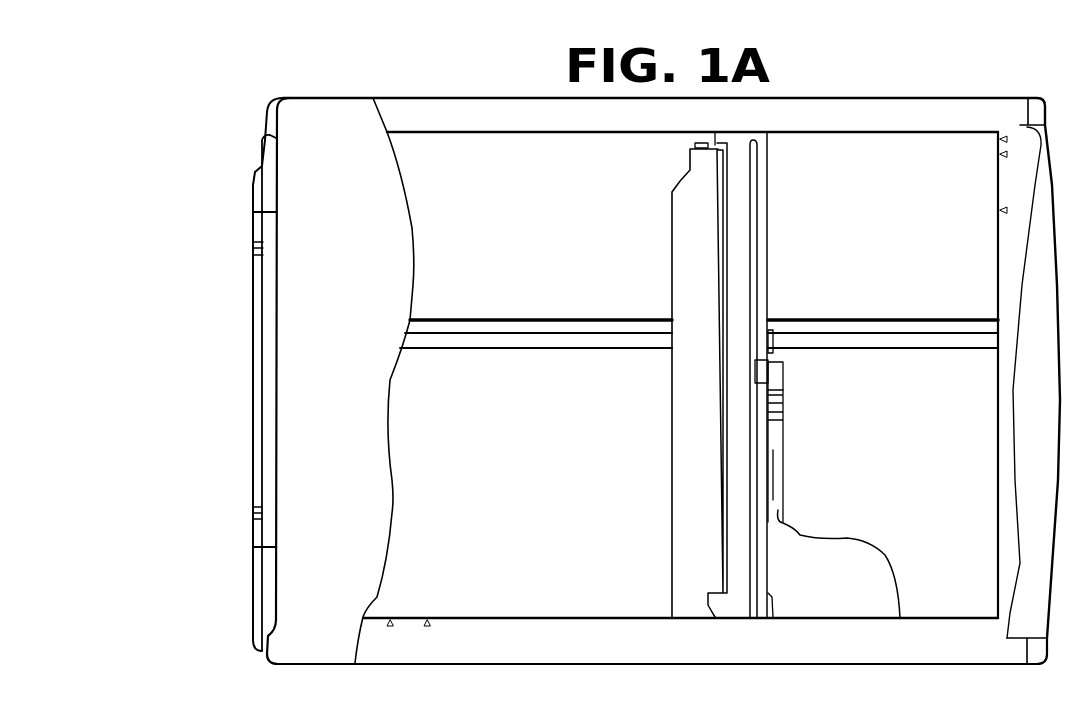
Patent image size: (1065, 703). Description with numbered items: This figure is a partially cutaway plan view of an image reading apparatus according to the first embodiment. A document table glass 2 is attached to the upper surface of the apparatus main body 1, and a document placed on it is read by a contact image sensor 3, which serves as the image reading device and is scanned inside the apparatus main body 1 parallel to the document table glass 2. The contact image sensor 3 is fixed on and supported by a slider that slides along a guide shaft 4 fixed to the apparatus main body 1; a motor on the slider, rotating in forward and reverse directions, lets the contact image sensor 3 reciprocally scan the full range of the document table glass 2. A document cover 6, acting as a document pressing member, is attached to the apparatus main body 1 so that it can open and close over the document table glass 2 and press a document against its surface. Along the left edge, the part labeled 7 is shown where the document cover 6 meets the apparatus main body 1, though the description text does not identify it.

The apparatus main body 1 is at (963, 645).
The document table glass 2 is at (492, 605).
The contact image sensor 3 is at (763, 577).
The guide shaft 4 is at (550, 340).
The document cover 6 is at (328, 640).
The hinge 7 is at (262, 533).